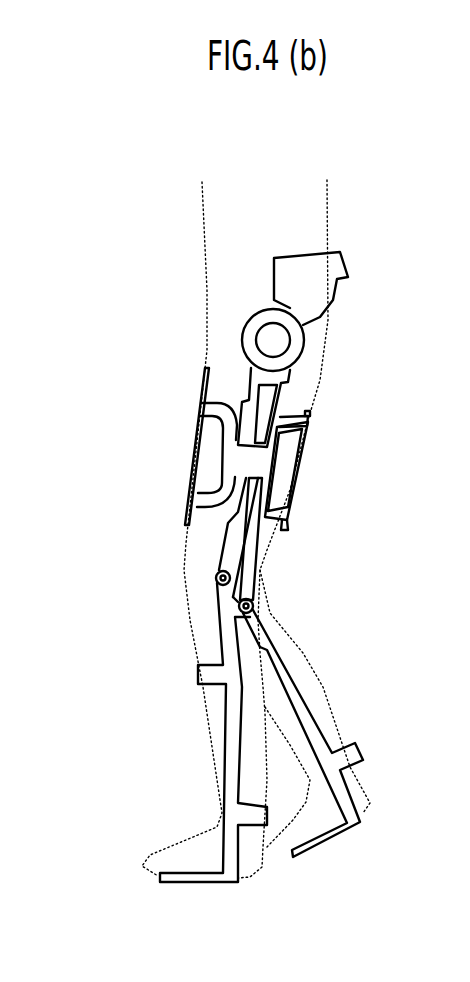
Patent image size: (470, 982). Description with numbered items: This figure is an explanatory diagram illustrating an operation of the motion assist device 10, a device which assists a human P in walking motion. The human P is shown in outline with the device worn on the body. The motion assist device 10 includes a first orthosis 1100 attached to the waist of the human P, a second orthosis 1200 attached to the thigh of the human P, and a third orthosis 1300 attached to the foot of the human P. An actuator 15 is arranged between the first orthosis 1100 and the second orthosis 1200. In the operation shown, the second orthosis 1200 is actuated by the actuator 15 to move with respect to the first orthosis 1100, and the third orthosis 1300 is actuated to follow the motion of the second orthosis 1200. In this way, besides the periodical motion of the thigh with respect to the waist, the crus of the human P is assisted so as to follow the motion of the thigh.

The motion assist device 10 is at (125, 217).
The first orthosis 1100 is at (345, 242).
The actuator 15 is at (312, 350).
The second orthosis 1200 is at (157, 440).
The third orthosis 1300 is at (173, 668).
The human P is at (187, 185).